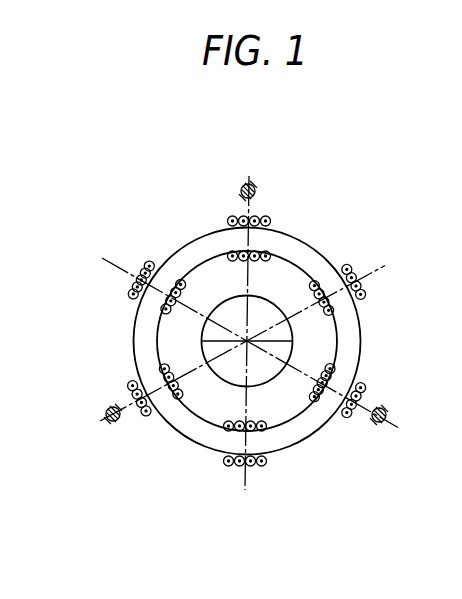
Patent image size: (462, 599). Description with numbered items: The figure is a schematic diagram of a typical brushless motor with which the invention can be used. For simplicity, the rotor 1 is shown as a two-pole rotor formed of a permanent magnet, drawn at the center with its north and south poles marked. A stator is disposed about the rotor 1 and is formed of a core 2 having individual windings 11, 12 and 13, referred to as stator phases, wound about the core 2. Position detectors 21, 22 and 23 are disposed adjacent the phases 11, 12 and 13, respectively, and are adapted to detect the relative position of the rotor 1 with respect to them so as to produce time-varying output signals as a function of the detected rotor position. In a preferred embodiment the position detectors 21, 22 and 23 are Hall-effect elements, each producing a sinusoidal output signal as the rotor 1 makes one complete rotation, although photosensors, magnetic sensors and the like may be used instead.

The rotor 1 is at (270, 386).
The core 2 is at (210, 449).
The winding 11 is at (130, 292).
The winding 12 is at (347, 264).
The winding 13 is at (272, 222).
The position detector 21 is at (381, 424).
The position detector 22 is at (113, 422).
The position detector 23 is at (254, 187).